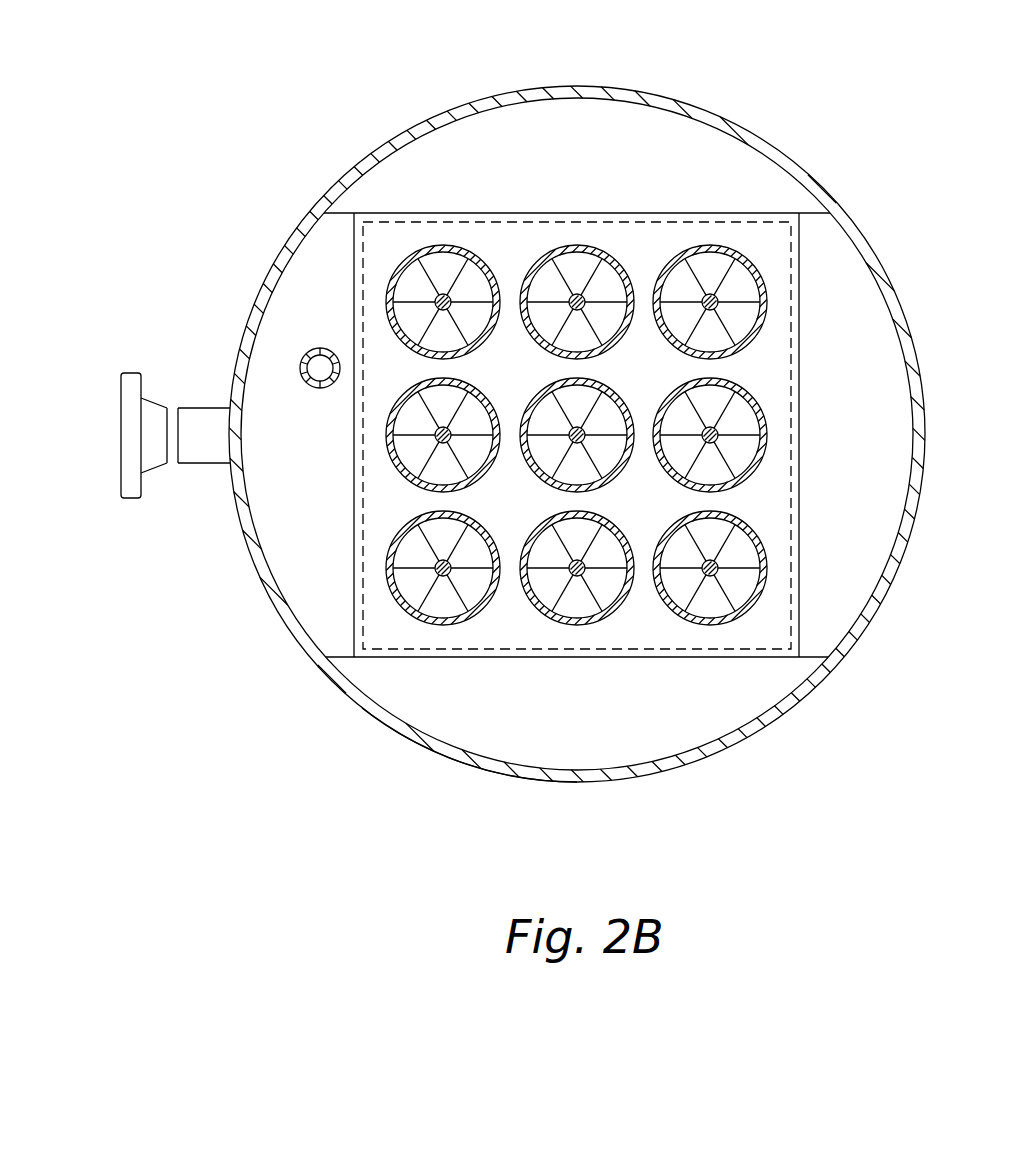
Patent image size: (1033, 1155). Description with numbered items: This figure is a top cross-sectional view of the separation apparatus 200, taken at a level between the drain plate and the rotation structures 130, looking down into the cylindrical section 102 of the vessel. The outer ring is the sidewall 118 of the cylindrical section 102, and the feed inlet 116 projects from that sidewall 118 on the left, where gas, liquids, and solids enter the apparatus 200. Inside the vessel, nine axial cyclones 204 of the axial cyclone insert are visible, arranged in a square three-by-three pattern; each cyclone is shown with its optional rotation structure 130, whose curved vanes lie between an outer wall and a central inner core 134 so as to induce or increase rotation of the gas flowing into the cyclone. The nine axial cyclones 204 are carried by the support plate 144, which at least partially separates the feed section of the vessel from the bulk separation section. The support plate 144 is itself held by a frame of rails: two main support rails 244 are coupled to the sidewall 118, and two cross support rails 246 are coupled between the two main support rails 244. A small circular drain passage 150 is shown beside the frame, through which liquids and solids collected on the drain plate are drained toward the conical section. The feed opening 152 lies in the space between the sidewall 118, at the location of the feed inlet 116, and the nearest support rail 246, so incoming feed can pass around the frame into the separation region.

The separation apparatus 200 is at (222, 30).
The cylindrical section 102 is at (361, 160).
The sidewall 118 is at (360, 708).
The feed inlet 116 is at (120, 418).
The drain passage 150 is at (318, 388).
The feed opening 152 is at (331, 566).
The support plate 144 is at (643, 628).
The main support rails 244 is at (633, 212).
The cross support rails 246 is at (352, 500).
The rotation structure 130 is at (413, 288).
The axial cyclones 204 is at (490, 400).
The inner core 134 is at (455, 297).